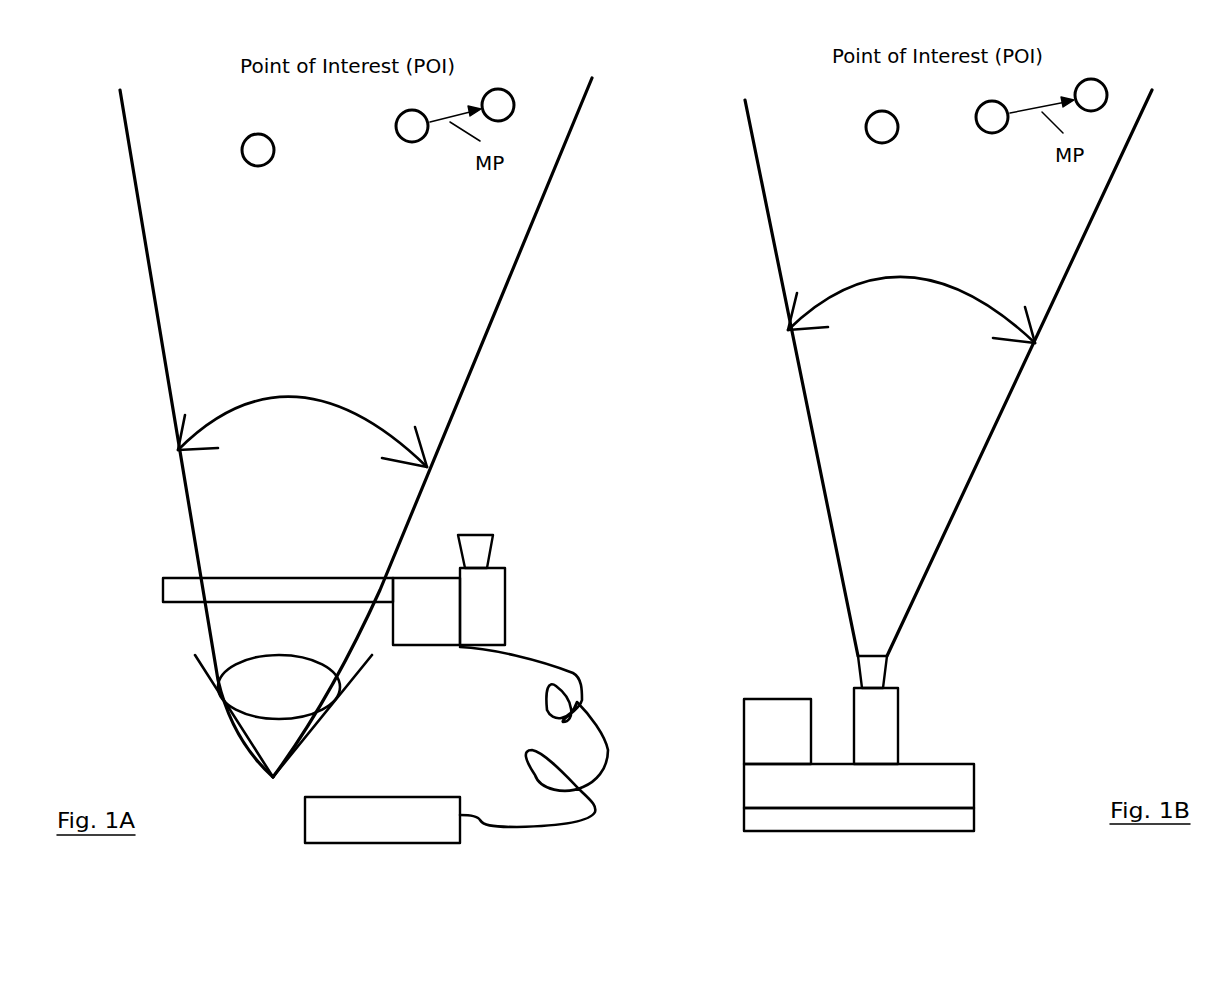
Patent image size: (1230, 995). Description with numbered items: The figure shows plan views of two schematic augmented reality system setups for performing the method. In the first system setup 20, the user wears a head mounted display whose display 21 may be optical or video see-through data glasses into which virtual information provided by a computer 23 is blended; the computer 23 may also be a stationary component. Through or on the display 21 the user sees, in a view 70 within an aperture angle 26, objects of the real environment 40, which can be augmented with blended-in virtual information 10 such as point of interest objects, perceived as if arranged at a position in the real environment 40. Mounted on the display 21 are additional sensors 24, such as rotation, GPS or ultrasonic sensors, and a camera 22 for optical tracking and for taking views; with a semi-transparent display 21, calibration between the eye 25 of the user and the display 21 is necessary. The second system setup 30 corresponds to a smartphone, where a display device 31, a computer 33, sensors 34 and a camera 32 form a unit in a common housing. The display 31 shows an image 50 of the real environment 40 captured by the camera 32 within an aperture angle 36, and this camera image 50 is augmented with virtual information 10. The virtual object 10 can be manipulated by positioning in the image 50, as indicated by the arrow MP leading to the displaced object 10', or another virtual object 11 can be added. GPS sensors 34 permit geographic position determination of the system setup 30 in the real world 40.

In FIG. 1A, the virtual information 10 is at (396, 121).
In FIG. 1B, the virtual information 10 is at (977, 111).
In FIG. 1A, the displaced virtual object 10' is at (514, 94).
In FIG. 1B, the displaced virtual object 10' is at (1107, 83).
In FIG. 1A, the another virtual object 11 is at (248, 138).
In FIG. 1B, the another virtual object 11 is at (867, 116).
In FIG. 1A, the system setup 20 is at (138, 700).
In FIG. 1A, the display 21 is at (175, 602).
In FIG. 1A, the camera 22 is at (503, 567).
In FIG. 1A, the computer 23 is at (317, 807).
In FIG. 1A, the additional sensors 24 is at (437, 633).
In FIG. 1A, the eye 25 is at (250, 697).
In FIG. 1A, the aperture angle 26 is at (276, 418).
In FIG. 1B, the system setup 30 is at (1053, 689).
In FIG. 1B, the display device 31 is at (743, 818).
In FIG. 1B, the camera 32 is at (877, 732).
In FIG. 1B, the computer 33 is at (963, 777).
In FIG. 1B, the sensors 34 is at (755, 742).
In FIG. 1B, the aperture angle 36 is at (966, 310).
In FIG. 1A, the real environment 40 is at (212, 283).
In FIG. 1B, the real environment 40 is at (816, 212).
In FIG. 1B, the image 50 is at (830, 836).
In FIG. 1A, the view 70 is at (245, 605).